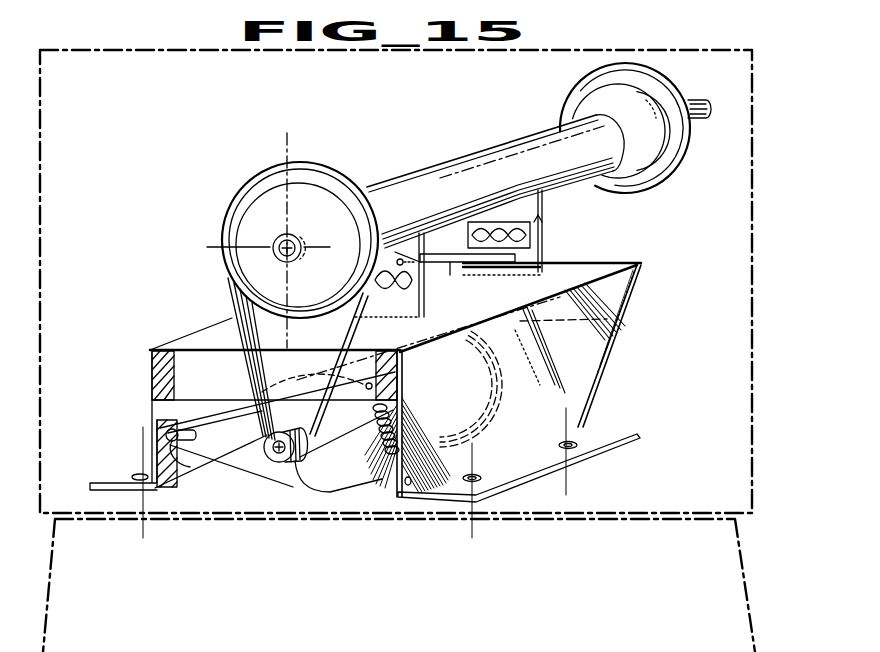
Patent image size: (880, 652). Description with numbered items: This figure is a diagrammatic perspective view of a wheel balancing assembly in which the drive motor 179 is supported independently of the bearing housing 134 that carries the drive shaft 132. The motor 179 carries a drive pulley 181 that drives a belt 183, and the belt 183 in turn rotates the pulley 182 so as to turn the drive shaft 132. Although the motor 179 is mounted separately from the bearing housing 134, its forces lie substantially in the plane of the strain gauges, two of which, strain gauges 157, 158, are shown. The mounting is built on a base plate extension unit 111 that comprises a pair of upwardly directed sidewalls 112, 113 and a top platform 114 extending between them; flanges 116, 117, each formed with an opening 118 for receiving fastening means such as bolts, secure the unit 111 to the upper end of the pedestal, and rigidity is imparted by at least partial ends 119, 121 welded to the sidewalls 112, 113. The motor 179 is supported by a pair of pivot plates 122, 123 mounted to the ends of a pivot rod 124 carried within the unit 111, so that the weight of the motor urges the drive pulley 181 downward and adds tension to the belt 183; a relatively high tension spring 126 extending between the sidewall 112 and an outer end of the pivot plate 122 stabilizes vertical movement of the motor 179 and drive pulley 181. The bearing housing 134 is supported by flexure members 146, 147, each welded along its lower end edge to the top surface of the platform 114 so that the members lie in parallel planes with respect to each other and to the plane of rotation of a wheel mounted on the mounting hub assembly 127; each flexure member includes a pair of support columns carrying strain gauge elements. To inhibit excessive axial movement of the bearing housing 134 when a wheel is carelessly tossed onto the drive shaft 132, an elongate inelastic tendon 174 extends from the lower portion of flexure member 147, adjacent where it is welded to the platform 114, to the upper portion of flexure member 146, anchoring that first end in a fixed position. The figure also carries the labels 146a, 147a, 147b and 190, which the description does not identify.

The base plate extension unit 111 is at (615, 342).
The sidewall 112 is at (576, 381).
The sidewall 113 is at (187, 460).
The top platform 114 is at (567, 278).
The flange 116 is at (590, 458).
The flange 117 is at (107, 493).
The opening 118 is at (135, 475).
The partial end 119 is at (220, 373).
The partial end 121 is at (628, 297).
The pivot plate 122 is at (168, 428).
The pivot plate 123 is at (481, 349).
The pivot rod 124 is at (231, 455).
The tension spring 126 is at (370, 478).
The mounting hub assembly 127 is at (618, 78).
The drive shaft 132 is at (322, 198).
The bearing housing 134 is at (377, 188).
The flexure member 146 is at (408, 303).
The guide bar end 146a is at (382, 188).
The flexure member 147 is at (552, 242).
The spring clip 147a is at (538, 222).
The post top 147b is at (459, 252).
The strain gauge 157 is at (452, 258).
The strain gauge 158 is at (383, 312).
The elongate inelastic tendon 174 is at (440, 250).
The motor 179 is at (330, 497).
The drive pulley 181 is at (294, 462).
The pulley 182 is at (326, 294).
The belt 183 is at (232, 302).
The pulley axis 190 is at (287, 147).